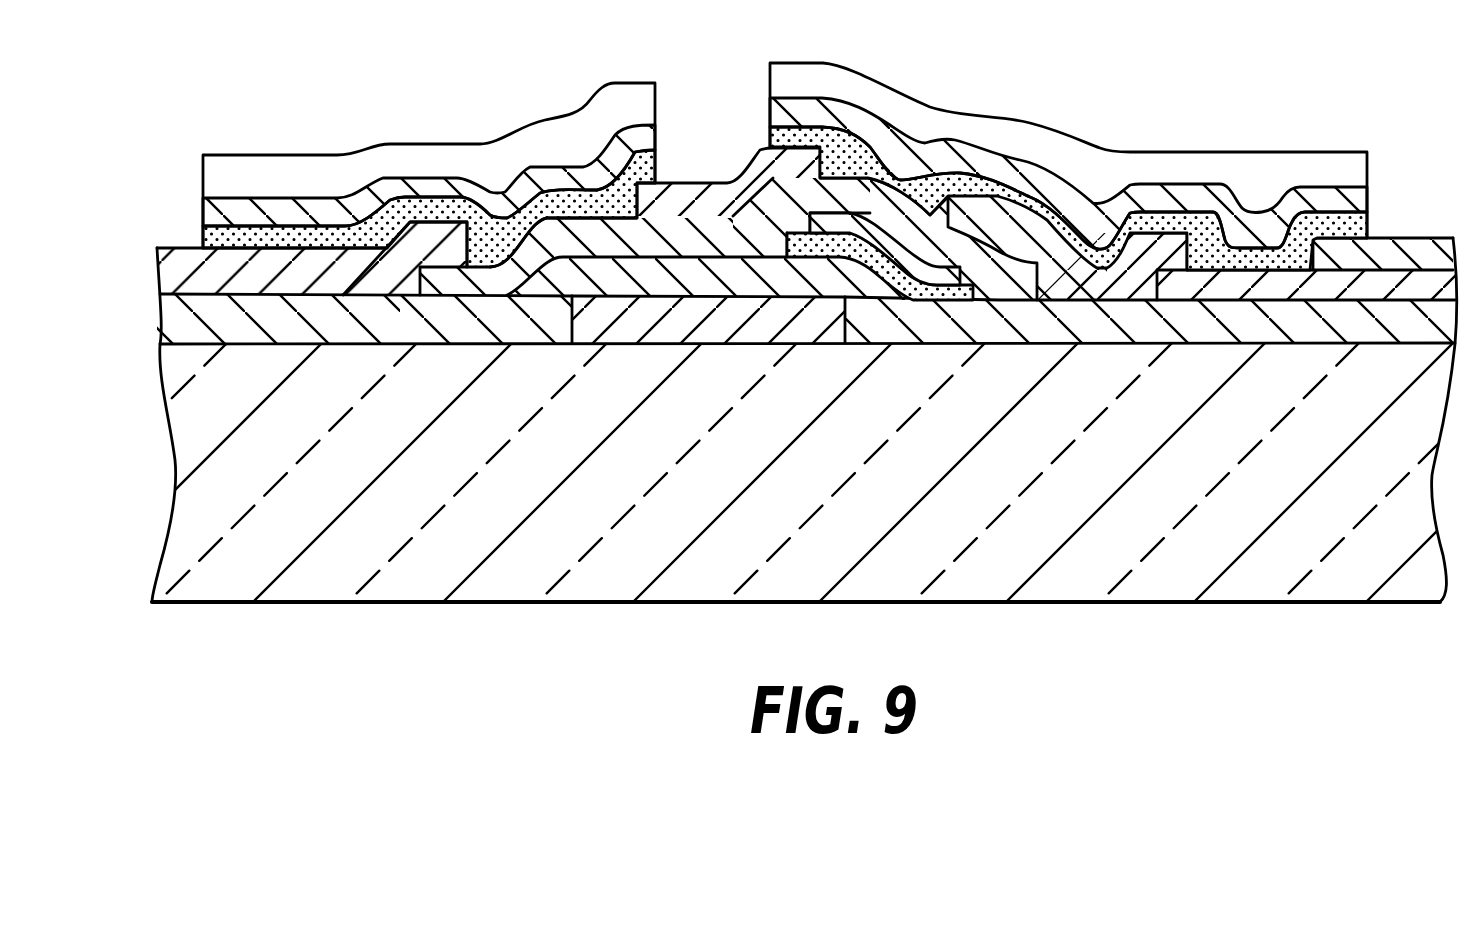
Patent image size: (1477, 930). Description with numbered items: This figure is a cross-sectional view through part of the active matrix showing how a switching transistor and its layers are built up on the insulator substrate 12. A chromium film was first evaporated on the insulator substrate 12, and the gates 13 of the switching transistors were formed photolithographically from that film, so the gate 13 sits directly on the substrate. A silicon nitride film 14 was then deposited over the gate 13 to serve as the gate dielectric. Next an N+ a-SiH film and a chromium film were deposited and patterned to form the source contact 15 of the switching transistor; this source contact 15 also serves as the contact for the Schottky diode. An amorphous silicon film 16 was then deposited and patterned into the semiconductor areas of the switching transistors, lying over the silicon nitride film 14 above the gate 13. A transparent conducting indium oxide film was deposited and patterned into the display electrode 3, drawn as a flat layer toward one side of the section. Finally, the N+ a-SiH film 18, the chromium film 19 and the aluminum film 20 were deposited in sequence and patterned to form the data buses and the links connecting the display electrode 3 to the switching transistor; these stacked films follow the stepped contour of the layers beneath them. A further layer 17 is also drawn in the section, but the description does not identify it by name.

The display electrode 3 is at (1420, 283).
The insulator substrate 12 is at (1062, 580).
The gate 13 is at (713, 327).
The silicon nitride film 14 is at (1295, 330).
The source contact 15 is at (908, 295).
The amorphous silicon film 16 is at (568, 258).
The gate insulating layer 17 is at (1393, 238).
The N+ a-SiH film 18 is at (1157, 212).
The chromium film 19 is at (978, 158).
The aluminum film 20 is at (805, 78).